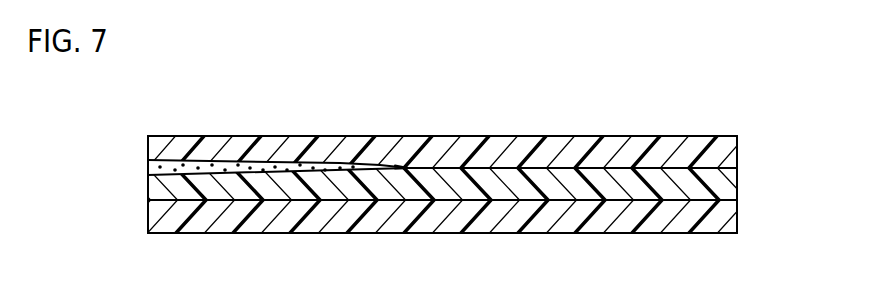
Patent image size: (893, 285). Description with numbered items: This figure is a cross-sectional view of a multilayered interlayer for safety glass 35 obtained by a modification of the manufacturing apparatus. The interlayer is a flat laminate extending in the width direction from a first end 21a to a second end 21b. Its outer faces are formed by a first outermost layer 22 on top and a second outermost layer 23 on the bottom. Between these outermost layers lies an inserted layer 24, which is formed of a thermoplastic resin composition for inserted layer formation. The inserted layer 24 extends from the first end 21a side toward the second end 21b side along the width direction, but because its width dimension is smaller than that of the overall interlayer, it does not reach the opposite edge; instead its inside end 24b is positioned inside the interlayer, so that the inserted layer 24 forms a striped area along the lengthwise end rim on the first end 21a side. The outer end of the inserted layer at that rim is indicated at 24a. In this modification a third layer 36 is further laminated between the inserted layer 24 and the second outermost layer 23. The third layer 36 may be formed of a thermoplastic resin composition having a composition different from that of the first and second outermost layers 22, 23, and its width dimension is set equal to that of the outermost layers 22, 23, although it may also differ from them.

The first end 21a is at (148, 152).
The second end 21b is at (738, 158).
The first outermost layer 22 is at (288, 146).
The second outermost layer 23 is at (545, 235).
The inserted layer 24 is at (220, 164).
The end portion of adhesive layer 24a is at (148, 166).
The inside end of the inserted layer 24b is at (409, 170).
The multilayered interlayer for safety glass 35 is at (650, 132).
The third layer 36 is at (272, 197).